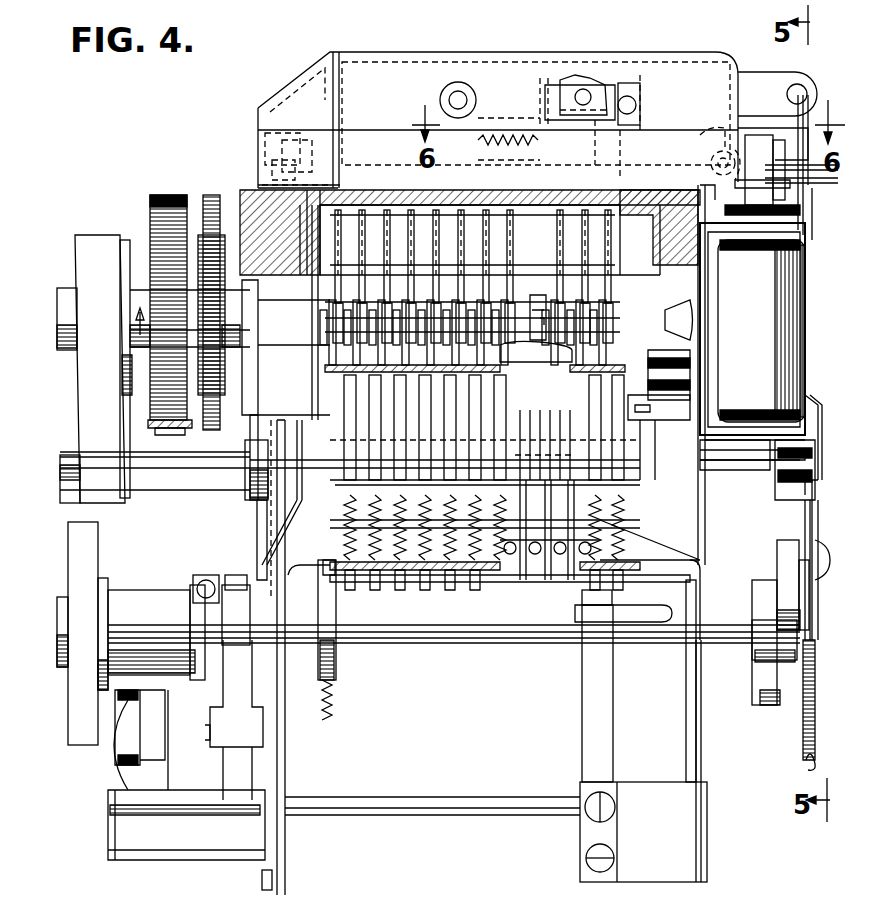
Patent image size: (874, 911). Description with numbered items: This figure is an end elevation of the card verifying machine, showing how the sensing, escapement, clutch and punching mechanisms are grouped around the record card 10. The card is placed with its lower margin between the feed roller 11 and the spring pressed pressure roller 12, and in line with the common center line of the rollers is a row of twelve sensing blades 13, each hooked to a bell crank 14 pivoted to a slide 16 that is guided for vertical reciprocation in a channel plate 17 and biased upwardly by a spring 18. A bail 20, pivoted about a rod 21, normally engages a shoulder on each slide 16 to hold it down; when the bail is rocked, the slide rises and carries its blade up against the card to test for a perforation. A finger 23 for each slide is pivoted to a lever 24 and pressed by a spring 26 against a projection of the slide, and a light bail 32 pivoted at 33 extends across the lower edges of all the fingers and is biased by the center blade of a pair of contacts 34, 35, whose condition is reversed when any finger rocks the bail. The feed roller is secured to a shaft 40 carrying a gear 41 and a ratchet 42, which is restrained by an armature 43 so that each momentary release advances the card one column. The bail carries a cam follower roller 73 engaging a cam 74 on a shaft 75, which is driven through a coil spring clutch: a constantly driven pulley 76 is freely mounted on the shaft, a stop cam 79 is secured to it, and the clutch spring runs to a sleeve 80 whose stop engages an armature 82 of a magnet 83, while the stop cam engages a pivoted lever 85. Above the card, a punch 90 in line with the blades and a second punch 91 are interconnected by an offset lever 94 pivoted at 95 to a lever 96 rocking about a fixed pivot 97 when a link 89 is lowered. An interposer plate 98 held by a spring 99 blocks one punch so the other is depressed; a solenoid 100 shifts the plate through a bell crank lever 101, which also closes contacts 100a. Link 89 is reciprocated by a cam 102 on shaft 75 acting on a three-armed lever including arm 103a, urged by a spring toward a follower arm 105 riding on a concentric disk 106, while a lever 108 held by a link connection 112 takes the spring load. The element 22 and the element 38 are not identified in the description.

The record card 10 is at (398, 188).
The feed roller 11 is at (320, 241).
The pressure roller 12 is at (310, 130).
The sensing blades 13 is at (330, 266).
The bell crank 14 is at (600, 308).
The slide 16 is at (345, 413).
The channel plate 17 is at (630, 383).
The spring 18 is at (415, 572).
The bail 20 is at (320, 456).
The rod 21 is at (715, 450).
The guide plate 22 is at (600, 250).
The finger 23 is at (560, 577).
The lever 24 is at (570, 418).
The spring 26 is at (530, 522).
The bail 32 is at (668, 572).
The pivot 33 is at (545, 802).
The contact 34 is at (612, 731).
The contact 35 is at (585, 695).
The coil 38 is at (655, 362).
The shaft 40 is at (48, 296).
The gear 41 is at (217, 195).
The ratchet 42 is at (168, 195).
The armature 43 is at (150, 426).
The cam follower roller 73 is at (322, 564).
The cam 74 is at (340, 680).
The shaft 75 is at (470, 638).
The pulley 76 is at (100, 558).
The stop cam 79 is at (238, 588).
The sleeve 80 is at (125, 602).
The armature 82 is at (130, 742).
The magnet 83 is at (118, 772).
The pivoted lever 85 is at (250, 728).
The link 89 is at (805, 212).
The punch 90 is at (650, 78).
The punch 91 is at (552, 80).
The offset lever 94 is at (628, 95).
The pivot 95 is at (587, 88).
The lever 96 is at (742, 90).
The fixed pivot 97 is at (462, 88).
The interposer plate 98 is at (612, 140).
The spring 99 is at (505, 125).
The solenoid 100 is at (752, 341).
The contacts 100a is at (798, 178).
The bell crank lever 101 is at (710, 158).
The cam 102 is at (785, 622).
The lever arm 103a is at (822, 627).
The follower arm 105 is at (820, 750).
The concentric disk 106 is at (762, 587).
The lever 108 is at (820, 387).
The link connection 112 is at (815, 577).